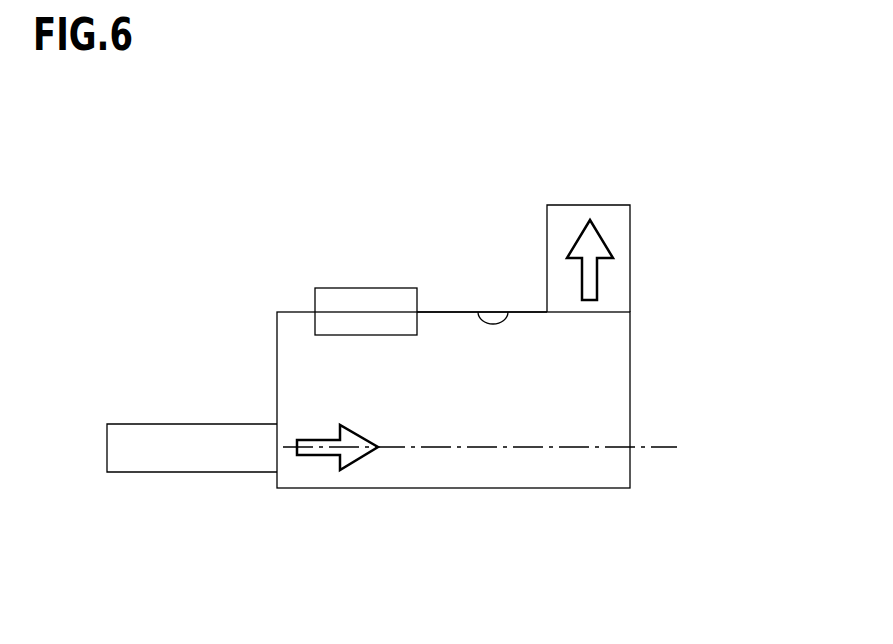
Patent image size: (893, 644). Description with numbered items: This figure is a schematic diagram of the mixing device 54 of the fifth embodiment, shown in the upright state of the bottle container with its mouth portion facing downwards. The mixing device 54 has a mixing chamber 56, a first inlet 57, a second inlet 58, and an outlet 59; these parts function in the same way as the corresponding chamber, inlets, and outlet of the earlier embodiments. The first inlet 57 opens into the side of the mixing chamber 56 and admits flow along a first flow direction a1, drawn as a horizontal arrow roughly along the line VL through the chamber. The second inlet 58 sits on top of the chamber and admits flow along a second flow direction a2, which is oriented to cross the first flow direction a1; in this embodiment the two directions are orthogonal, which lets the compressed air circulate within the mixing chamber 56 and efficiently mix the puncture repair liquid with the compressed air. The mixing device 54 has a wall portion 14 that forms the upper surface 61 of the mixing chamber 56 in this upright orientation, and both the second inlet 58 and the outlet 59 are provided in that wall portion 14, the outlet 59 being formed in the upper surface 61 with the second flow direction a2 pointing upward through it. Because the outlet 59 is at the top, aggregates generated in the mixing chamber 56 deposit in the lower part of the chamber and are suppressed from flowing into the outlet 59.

The wall portion 14 is at (447, 312).
The mixing device 54 is at (453, 359).
The mixing chamber 56 is at (535, 462).
The first inlet 57 is at (278, 458).
The second inlet 58 is at (365, 335).
The outlet 59 is at (612, 312).
The upper surface 61 is at (508, 312).
The first flow direction a1 is at (358, 458).
The second flow direction a2 is at (600, 240).
The virtual line VL is at (660, 447).